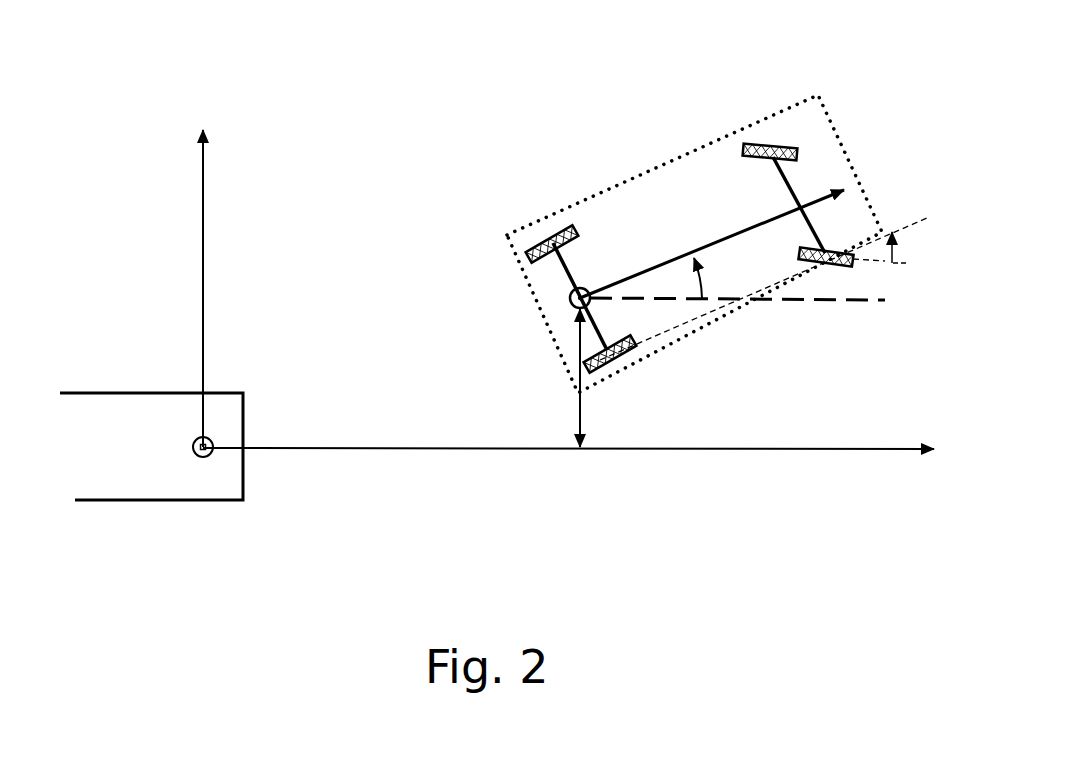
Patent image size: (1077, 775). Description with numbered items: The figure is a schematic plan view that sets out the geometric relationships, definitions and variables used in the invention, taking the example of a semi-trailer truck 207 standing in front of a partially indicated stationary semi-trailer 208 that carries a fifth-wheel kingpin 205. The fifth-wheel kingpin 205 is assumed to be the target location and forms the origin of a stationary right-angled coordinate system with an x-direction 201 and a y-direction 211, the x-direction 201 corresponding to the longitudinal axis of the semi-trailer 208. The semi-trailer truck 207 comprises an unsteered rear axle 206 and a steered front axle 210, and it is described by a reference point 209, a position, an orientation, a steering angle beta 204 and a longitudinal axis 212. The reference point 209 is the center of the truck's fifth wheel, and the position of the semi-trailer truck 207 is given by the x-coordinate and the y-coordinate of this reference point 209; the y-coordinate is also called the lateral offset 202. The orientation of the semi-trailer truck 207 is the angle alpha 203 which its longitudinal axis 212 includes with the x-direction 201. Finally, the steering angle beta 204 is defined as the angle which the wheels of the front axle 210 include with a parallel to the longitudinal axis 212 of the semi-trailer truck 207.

The x-direction 201 is at (713, 450).
The lateral offset 202 is at (575, 415).
The angle alpha 203 is at (690, 280).
The steering angle beta 204 is at (905, 248).
The fifth-wheel kingpin 205 is at (207, 442).
The unsteered rear axle 206 is at (547, 237).
The semi-trailer truck 207 is at (692, 157).
The semi-trailer 208 is at (125, 447).
The reference point 209 is at (575, 308).
The steered front axle 210 is at (790, 185).
The y-direction 211 is at (205, 185).
The longitudinal axis 212 is at (748, 232).